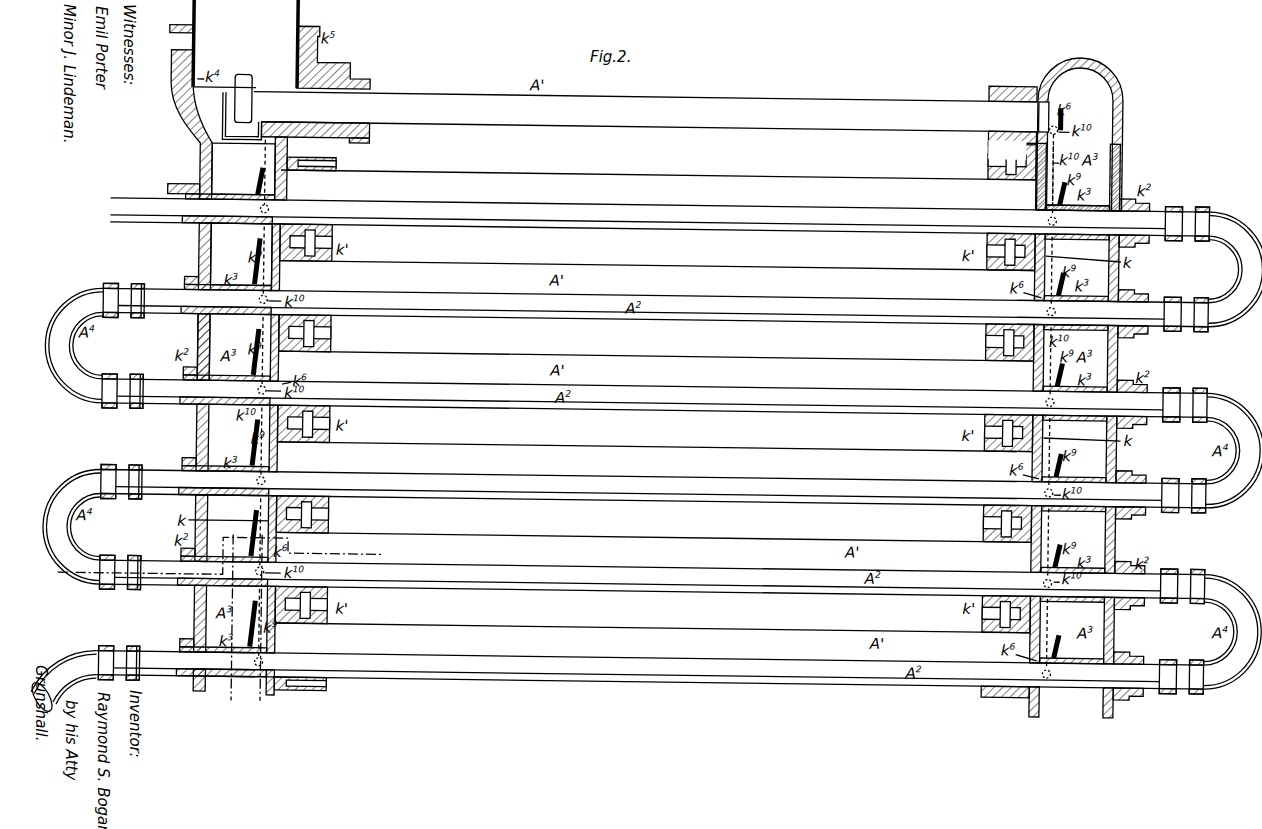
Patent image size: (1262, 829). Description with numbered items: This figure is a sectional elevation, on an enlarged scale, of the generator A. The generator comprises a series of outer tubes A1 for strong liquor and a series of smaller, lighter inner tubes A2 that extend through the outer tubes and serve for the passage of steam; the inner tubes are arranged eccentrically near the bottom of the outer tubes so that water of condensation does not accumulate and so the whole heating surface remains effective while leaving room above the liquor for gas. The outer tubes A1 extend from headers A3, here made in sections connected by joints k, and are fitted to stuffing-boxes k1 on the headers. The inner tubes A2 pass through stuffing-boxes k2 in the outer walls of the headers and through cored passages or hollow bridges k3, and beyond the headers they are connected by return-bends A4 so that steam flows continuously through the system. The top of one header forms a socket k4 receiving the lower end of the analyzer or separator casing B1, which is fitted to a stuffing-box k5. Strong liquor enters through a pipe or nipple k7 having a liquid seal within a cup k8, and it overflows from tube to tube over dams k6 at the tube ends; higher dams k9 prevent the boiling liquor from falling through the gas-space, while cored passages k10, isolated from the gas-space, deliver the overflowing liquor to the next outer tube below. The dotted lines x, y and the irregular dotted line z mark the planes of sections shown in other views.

The generator A is at (646, 88).
The outer tubes A1 is at (658, 187).
The inner tubes A2 is at (659, 217).
The headers A3 is at (244, 169).
The return-bends A4 is at (1235, 269).
The analyzer or separator chamber or casing B1 is at (245, 44).
The joints k is at (270, 341).
The stuffing-boxes k1 is at (318, 161).
The stuffing-boxes k2 is at (184, 183).
The cored passages or hollow bridges k3 is at (241, 233).
The socket k4 is at (334, 57).
The stuffing-box k5 is at (176, 40).
The dams k6 is at (280, 204).
The pipe or nipple k7 is at (248, 112).
The cup k8 is at (242, 118).
The higher dams k9 is at (262, 173).
The cored passages k10 is at (267, 216).
The dotted line x x is at (231, 619).
The dotted line y y is at (262, 619).
The irregular dotted line z z is at (219, 560).